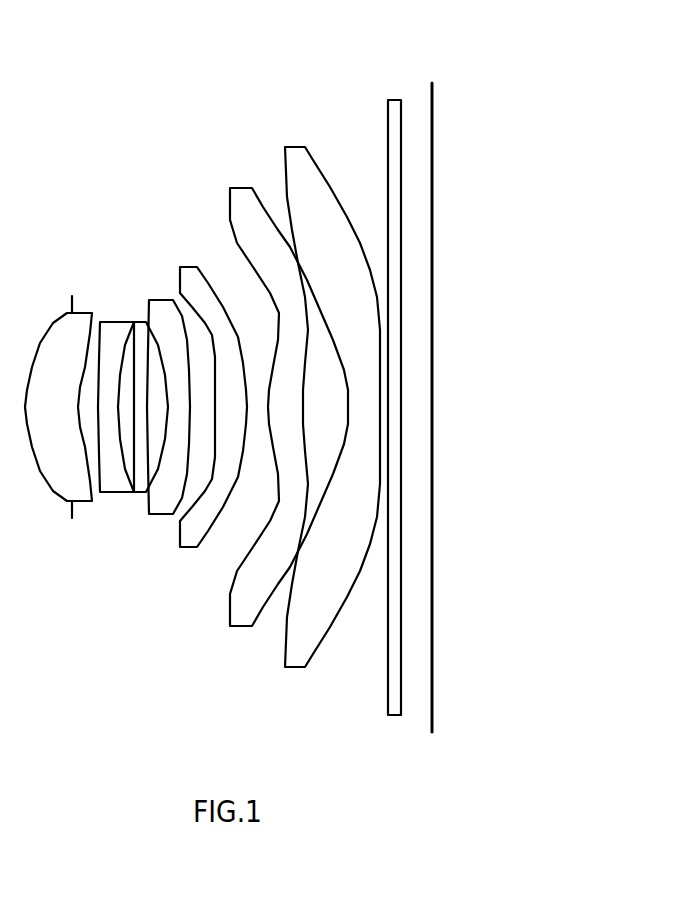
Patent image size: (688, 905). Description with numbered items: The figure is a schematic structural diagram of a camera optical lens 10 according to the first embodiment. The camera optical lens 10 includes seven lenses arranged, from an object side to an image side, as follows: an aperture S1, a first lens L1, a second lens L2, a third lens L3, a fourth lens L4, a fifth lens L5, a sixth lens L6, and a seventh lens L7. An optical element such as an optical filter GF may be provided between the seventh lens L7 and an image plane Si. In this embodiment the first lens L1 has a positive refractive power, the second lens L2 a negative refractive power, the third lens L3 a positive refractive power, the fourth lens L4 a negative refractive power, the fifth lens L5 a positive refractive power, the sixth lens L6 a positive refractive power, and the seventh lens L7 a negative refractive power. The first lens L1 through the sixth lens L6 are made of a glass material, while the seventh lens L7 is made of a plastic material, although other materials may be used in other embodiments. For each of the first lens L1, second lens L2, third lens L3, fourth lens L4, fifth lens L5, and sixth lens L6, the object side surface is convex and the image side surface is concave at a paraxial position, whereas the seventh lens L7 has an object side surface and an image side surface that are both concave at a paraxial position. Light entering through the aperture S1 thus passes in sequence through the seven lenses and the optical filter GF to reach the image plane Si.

The camera optical lens 10 is at (217, 68).
The aperture S1 is at (57, 399).
The first lens L1 is at (59, 392).
The second lens L2 is at (116, 393).
The third lens L3 is at (143, 393).
The fourth lens L4 is at (168, 390).
The fifth lens L5 is at (212, 392).
The sixth lens L6 is at (287, 394).
The seventh lens L7 is at (331, 390).
The optical filter GF is at (393, 393).
The image plane Si is at (431, 393).